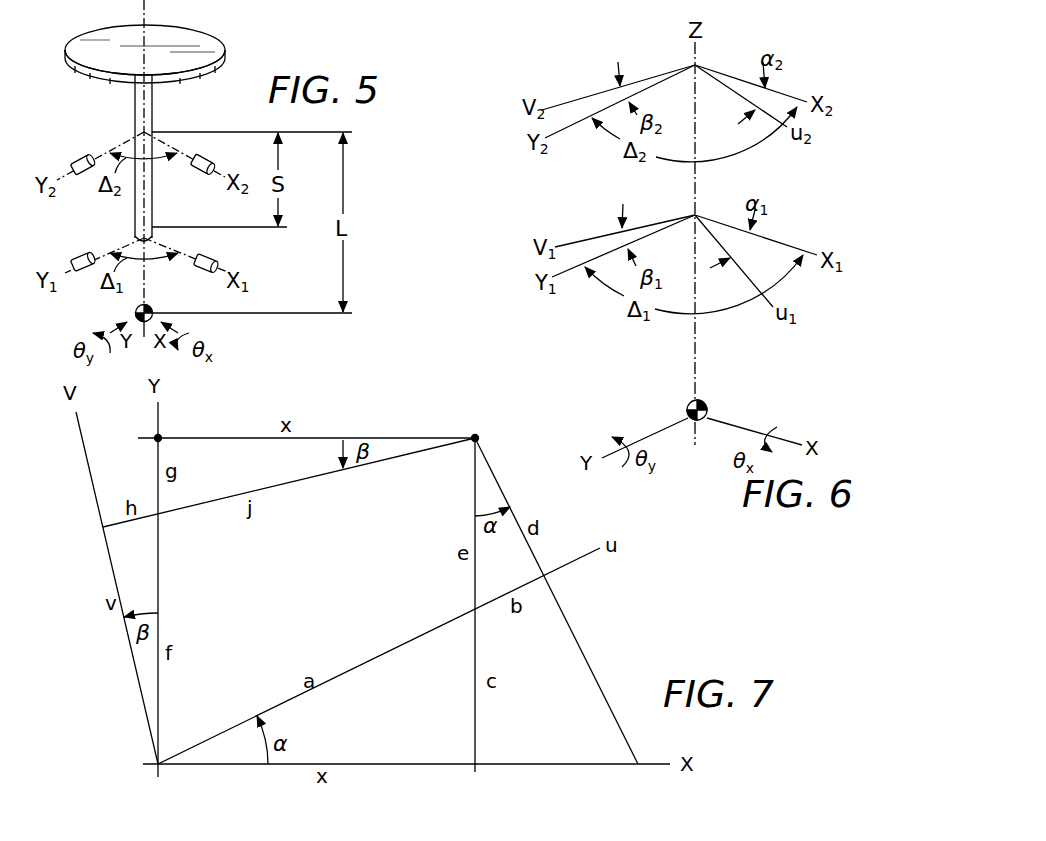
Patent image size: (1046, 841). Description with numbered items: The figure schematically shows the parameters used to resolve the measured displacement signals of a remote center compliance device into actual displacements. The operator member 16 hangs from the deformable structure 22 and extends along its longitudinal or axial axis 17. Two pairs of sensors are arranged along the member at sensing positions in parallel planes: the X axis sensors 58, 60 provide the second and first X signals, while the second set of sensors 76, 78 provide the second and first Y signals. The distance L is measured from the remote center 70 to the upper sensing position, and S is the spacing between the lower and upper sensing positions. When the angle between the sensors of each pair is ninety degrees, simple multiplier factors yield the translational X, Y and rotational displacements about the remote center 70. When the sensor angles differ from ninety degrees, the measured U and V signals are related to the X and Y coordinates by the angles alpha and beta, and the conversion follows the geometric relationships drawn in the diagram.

In FIG. 5, the deformable structure 22 is at (222, 29).
In FIG. 5, the operator member 16 is at (135, 97).
In FIG. 5, the longitudinal or axial axis 17 is at (150, 107).
In FIG. 6, the longitudinal or axial axis 17 is at (700, 358).
In FIG. 5, the sensor 58 is at (210, 156).
In FIG. 5, the sensor 76 is at (77, 157).
In FIG. 5, the sensor 60 is at (212, 256).
In FIG. 5, the sensor 78 is at (77, 255).
In FIG. 5, the remote center 70 is at (152, 308).
In FIG. 6, the remote center 70 is at (705, 402).